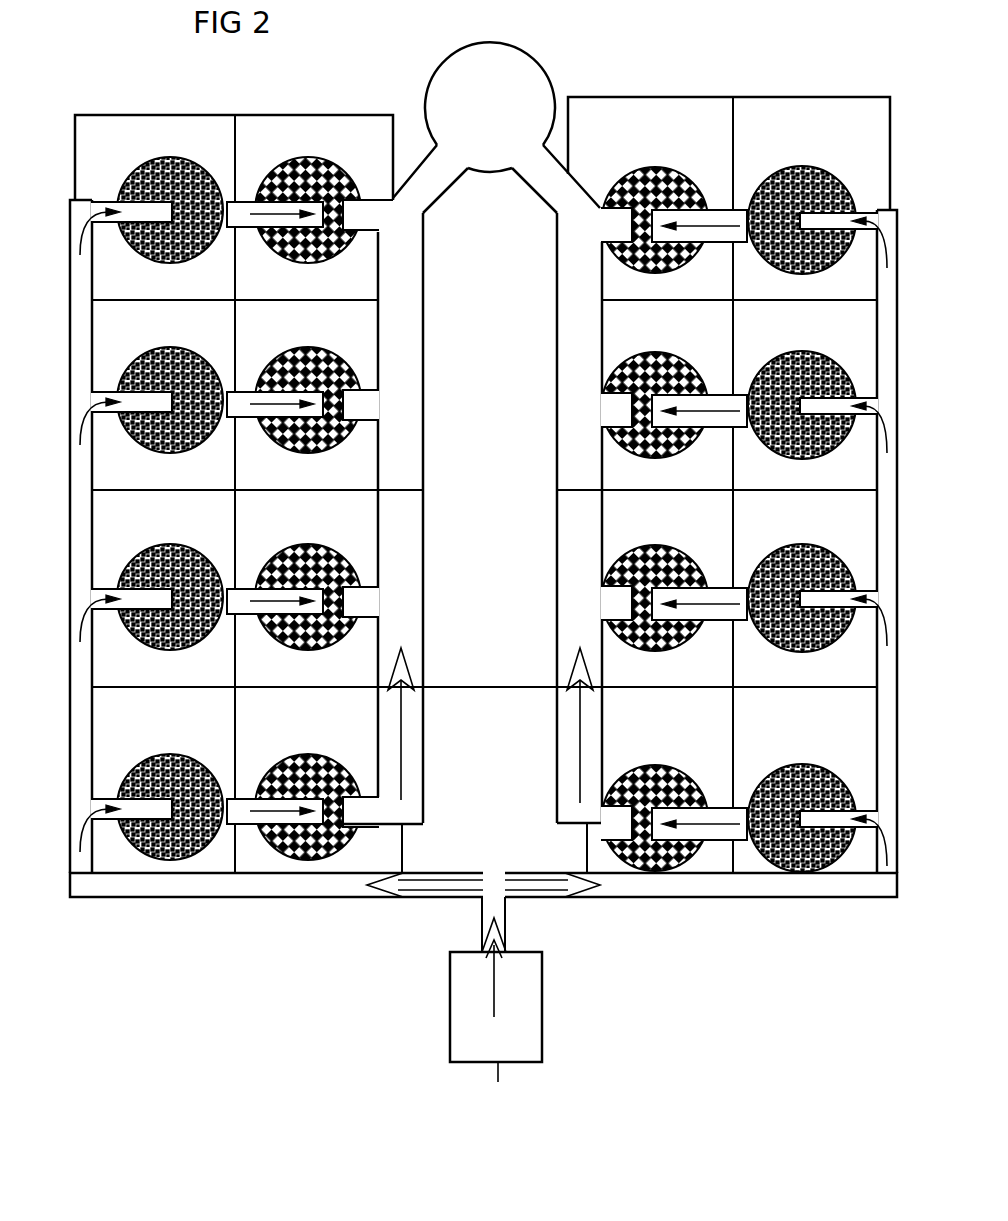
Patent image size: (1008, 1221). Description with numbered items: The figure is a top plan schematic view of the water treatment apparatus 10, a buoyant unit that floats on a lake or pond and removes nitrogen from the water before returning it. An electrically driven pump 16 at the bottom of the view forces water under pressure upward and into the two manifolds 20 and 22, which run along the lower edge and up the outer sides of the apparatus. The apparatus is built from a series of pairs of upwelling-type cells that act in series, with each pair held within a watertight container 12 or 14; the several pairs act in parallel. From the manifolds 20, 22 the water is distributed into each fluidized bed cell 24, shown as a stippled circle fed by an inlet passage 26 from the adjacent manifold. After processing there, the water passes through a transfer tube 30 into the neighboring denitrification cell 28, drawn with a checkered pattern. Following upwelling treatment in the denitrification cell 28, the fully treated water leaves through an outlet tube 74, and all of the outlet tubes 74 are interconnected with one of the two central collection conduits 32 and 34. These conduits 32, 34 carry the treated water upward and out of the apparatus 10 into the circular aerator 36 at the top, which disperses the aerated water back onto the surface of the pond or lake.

The water treatment apparatus 10 is at (757, 63).
The watertight container 12 is at (826, 96).
The watertight container 14 is at (636, 92).
The pump 16 is at (542, 1002).
The manifold 20 is at (798, 898).
The manifold 22 is at (167, 896).
The fluidized bed cell 24 is at (185, 148).
The inlet channel 26 is at (96, 200).
The denitrification cell 28 is at (324, 150).
The transfer tube 30 is at (236, 197).
The collection conduit 32 is at (425, 512).
The collection conduit 34 is at (556, 383).
The aerator 36 is at (487, 172).
The outlet tube 74 is at (376, 242).